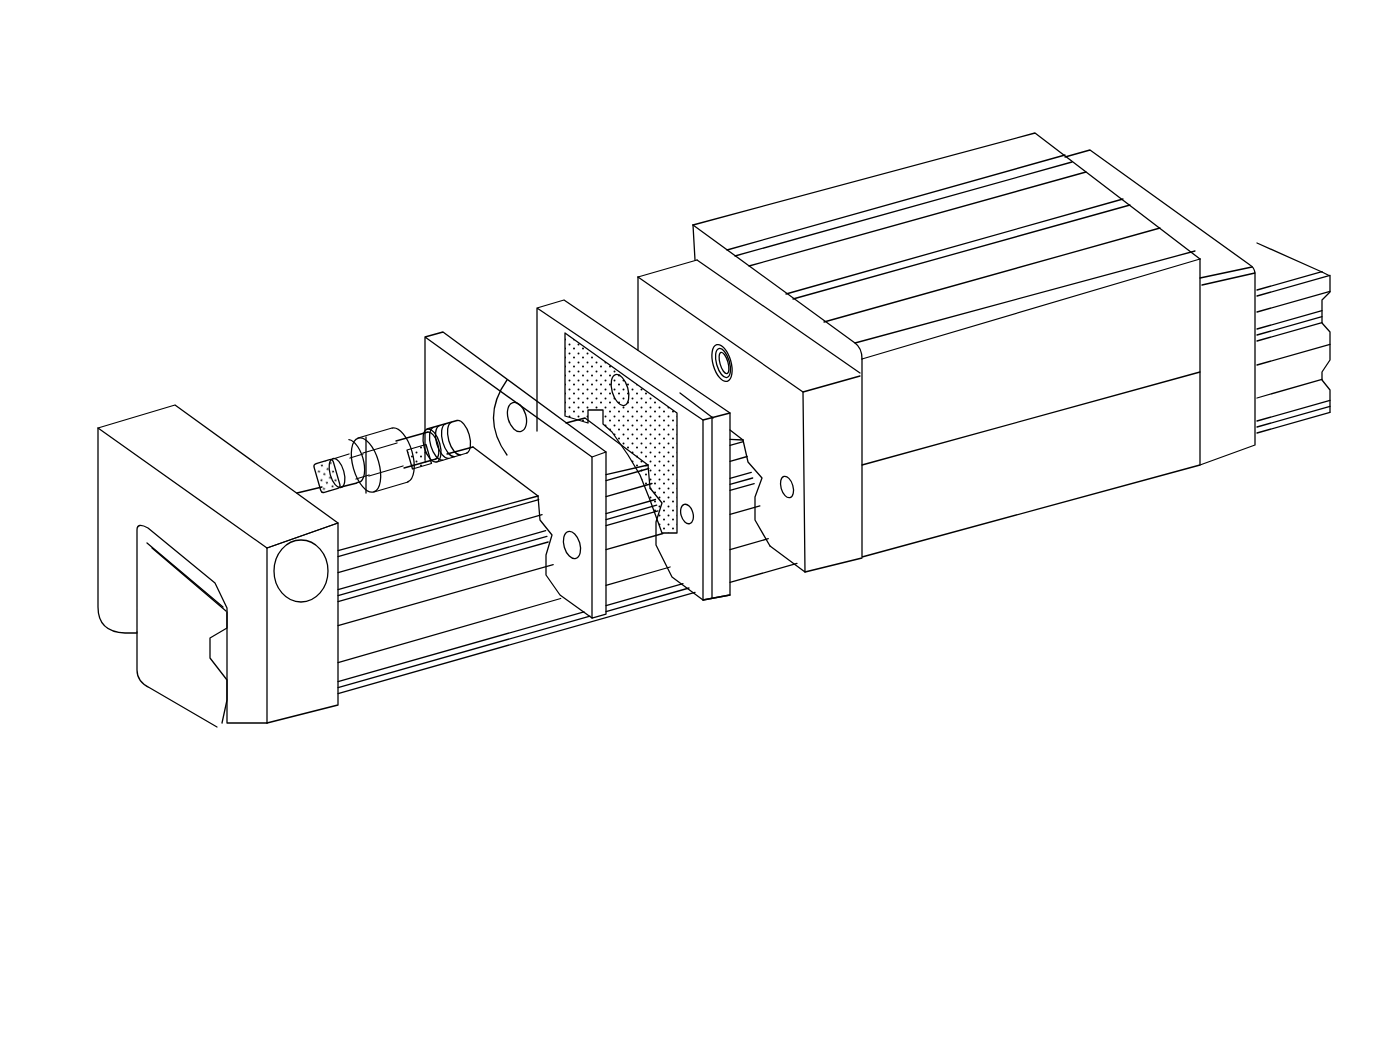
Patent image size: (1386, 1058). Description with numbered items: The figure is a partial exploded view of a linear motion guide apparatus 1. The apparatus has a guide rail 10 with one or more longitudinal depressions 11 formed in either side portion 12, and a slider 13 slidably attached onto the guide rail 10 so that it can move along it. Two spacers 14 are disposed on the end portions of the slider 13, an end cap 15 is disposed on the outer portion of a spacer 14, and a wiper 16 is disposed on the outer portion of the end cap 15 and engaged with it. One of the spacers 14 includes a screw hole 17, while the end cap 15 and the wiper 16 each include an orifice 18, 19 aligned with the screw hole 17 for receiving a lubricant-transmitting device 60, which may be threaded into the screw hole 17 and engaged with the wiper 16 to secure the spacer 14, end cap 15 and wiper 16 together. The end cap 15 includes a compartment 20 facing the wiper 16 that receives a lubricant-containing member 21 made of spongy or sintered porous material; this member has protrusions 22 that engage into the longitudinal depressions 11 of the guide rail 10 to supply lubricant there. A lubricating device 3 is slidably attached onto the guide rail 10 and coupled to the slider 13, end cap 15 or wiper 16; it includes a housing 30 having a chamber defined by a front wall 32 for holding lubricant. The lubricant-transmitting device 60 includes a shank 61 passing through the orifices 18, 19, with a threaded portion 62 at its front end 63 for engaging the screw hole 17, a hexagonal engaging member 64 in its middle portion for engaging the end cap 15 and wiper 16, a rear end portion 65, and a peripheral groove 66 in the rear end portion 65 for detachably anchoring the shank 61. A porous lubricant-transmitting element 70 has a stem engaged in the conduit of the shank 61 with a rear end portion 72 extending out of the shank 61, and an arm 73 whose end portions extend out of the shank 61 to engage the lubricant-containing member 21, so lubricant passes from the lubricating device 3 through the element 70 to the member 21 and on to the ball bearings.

The linear motion guide apparatus 1 is at (443, 210).
The lubricating device 3 is at (133, 393).
The guide rail 10 is at (1268, 252).
The longitudinal depressions 11 is at (1305, 300).
The side portion 12 is at (1322, 330).
The slider 13 is at (830, 192).
The spacers 14 is at (848, 518).
The end cap 15 is at (726, 563).
The wiper 16 is at (605, 618).
The screw hole 17 is at (722, 345).
The orifice 18 is at (607, 380).
The orifice 19 is at (510, 408).
The compartment 20 is at (552, 335).
The lubricant-containing member 21 is at (586, 368).
The protrusions 22 is at (695, 575).
The housing 30 is at (305, 690).
The front wall 32 is at (105, 520).
The lubricant-transmitting device 60 is at (363, 428).
The shank 61 is at (412, 433).
The threaded portion 62 is at (427, 420).
The front end 63 is at (456, 424).
The engaging member 64 is at (392, 483).
The rear end portion 65 is at (363, 480).
The peripheral groove 66 is at (350, 470).
The lubricant-transmitting element 70 is at (335, 458).
The rear end portion 72 is at (318, 458).
The arm 73 is at (413, 463).